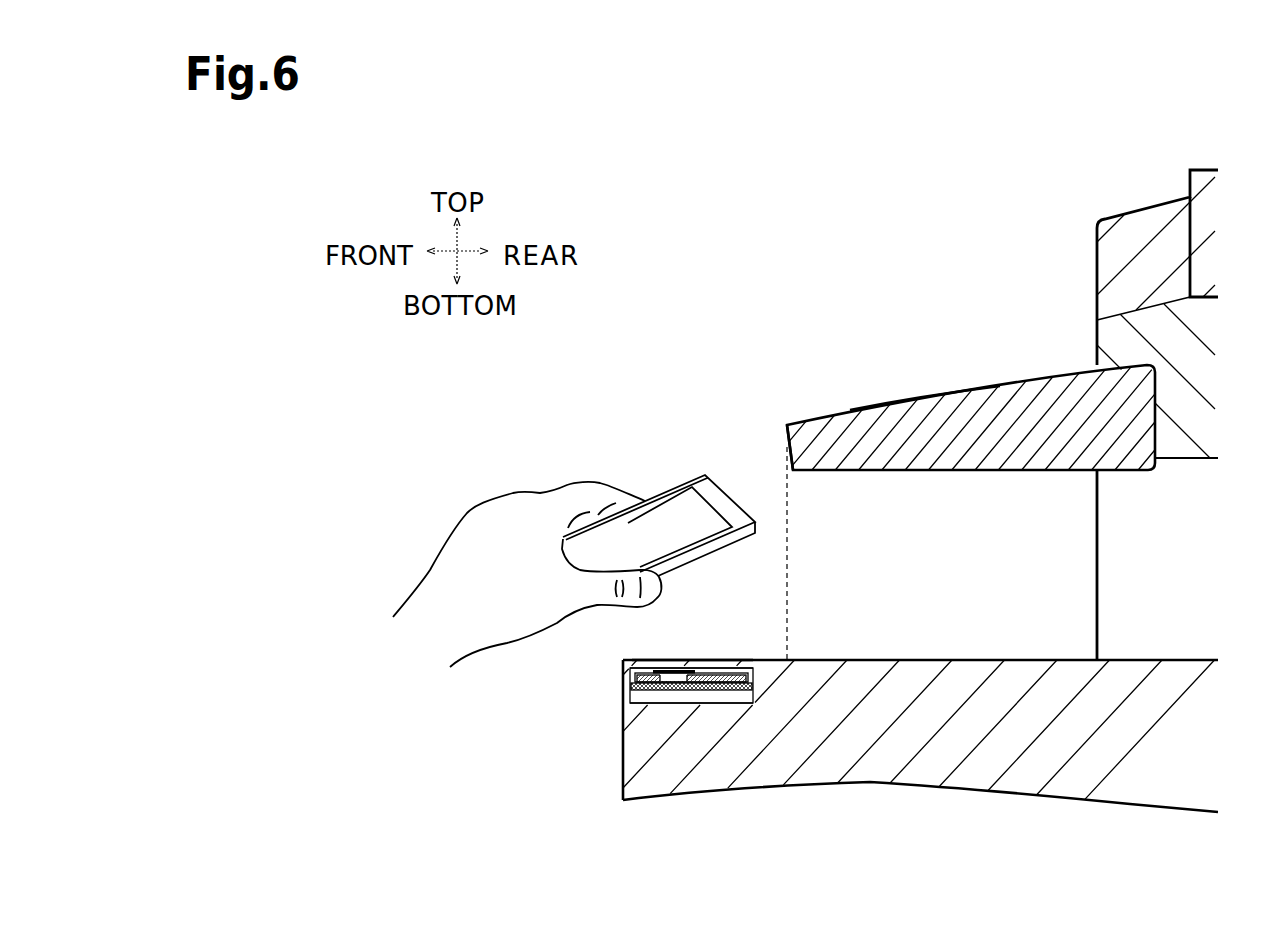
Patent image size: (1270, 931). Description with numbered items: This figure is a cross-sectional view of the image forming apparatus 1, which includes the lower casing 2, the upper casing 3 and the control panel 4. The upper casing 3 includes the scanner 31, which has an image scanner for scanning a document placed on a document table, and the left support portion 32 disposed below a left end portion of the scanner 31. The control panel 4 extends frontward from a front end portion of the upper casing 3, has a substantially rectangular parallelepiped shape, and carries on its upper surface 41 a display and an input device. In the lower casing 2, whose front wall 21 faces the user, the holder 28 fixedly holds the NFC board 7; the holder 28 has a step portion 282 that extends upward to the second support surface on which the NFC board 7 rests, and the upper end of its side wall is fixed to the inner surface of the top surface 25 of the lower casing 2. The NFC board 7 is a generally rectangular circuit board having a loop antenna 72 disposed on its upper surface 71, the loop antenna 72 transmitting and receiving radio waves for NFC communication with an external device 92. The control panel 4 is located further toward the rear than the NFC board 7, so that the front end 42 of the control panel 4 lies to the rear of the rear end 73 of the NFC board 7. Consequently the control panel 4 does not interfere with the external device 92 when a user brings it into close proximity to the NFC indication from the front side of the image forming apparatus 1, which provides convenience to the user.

The image forming apparatus 1 is at (963, 242).
The lower casing 2 is at (888, 713).
The front wall of housing 21 is at (622, 763).
The top surface 25 is at (698, 660).
The holder 28 is at (655, 713).
The step portion 282 is at (627, 687).
The upper casing 3 is at (1124, 415).
The scanner 31 is at (1097, 228).
The left support portion 32 is at (1097, 512).
The control panel 4 is at (937, 499).
The upper surface 41 is at (914, 400).
The front end 42 is at (785, 432).
The NFC board 7 is at (675, 651).
The upper surface 71 is at (723, 673).
The loop antenna 72 is at (662, 670).
The rear end 73 is at (747, 668).
The external device 92 is at (703, 474).